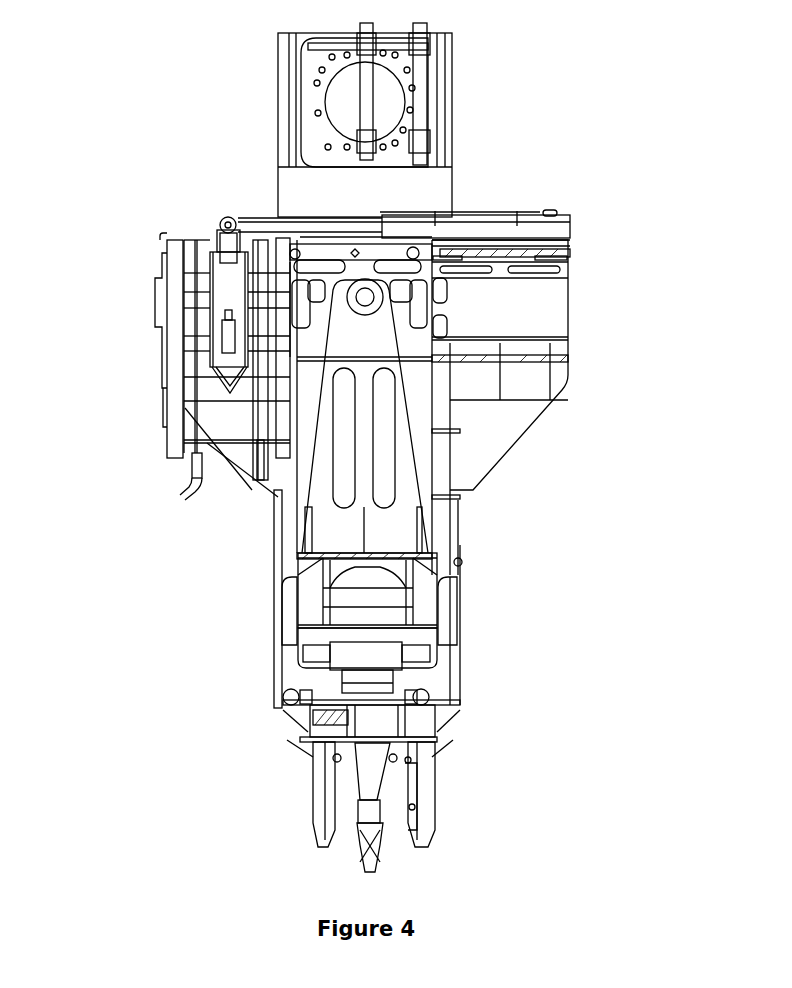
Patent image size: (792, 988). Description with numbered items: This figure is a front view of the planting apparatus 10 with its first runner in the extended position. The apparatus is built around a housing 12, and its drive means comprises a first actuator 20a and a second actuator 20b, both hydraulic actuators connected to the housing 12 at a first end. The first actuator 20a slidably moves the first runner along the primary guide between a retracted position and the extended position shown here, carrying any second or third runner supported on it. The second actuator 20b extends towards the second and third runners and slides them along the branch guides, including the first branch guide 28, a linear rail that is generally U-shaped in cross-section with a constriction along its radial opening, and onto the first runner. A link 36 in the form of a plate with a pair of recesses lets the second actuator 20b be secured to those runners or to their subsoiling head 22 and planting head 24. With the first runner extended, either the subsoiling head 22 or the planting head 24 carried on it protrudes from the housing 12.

The planting apparatus 10 is at (642, 157).
The housing 12 is at (440, 105).
The first actuator 20a is at (372, 299).
The second actuator 20b is at (499, 226).
The subsoiling head 22 is at (420, 580).
The planting head 24 is at (178, 265).
The first branch guide 28 is at (523, 338).
The link 36 is at (294, 288).